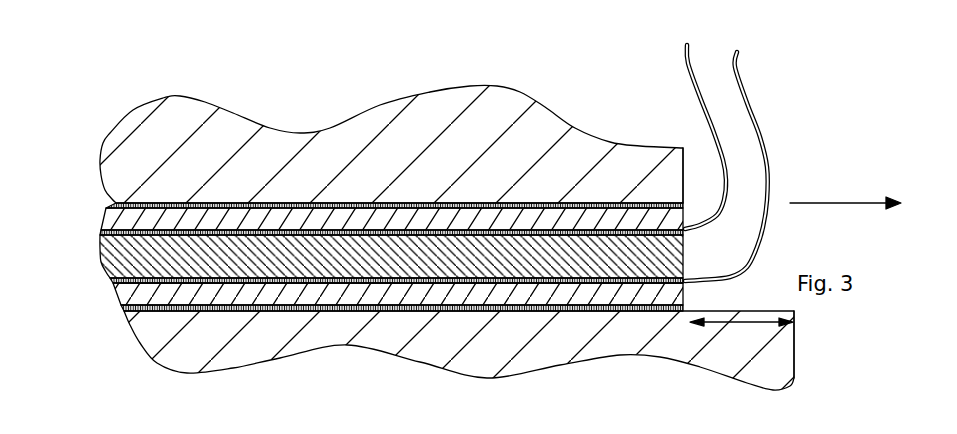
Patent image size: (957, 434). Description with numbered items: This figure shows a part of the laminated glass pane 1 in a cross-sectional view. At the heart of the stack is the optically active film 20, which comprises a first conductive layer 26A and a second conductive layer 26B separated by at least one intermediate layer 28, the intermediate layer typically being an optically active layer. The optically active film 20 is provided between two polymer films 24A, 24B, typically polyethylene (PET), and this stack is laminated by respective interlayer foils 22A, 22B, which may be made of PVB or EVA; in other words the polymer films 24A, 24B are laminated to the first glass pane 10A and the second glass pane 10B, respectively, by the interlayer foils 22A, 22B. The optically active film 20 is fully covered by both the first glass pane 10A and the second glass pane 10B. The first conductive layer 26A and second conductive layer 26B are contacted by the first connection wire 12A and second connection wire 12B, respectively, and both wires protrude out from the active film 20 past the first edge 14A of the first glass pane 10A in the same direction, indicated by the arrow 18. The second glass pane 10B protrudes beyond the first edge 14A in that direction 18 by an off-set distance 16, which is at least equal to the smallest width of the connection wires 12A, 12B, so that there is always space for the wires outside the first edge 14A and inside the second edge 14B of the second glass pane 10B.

The laminated glass pane 1 is at (104, 98).
The first glass pane 10A is at (570, 142).
The second glass pane 10B is at (427, 330).
The first connection wire 12A is at (697, 126).
The second connection wire 12B is at (729, 152).
The first edge 14A is at (684, 166).
The second edge 14B is at (795, 353).
The off-set distance 16 is at (741, 335).
The direction 18 is at (845, 191).
The optically active film 20 is at (100, 262).
The first interlayer foil 22A is at (116, 203).
The second interlayer foil 22B is at (122, 310).
The first polymer film 24A is at (604, 215).
The second polymer film 24B is at (367, 295).
The first conductive layer 26A is at (101, 232).
The second conductive layer 26B is at (113, 280).
The intermediate layer 28 is at (545, 284).